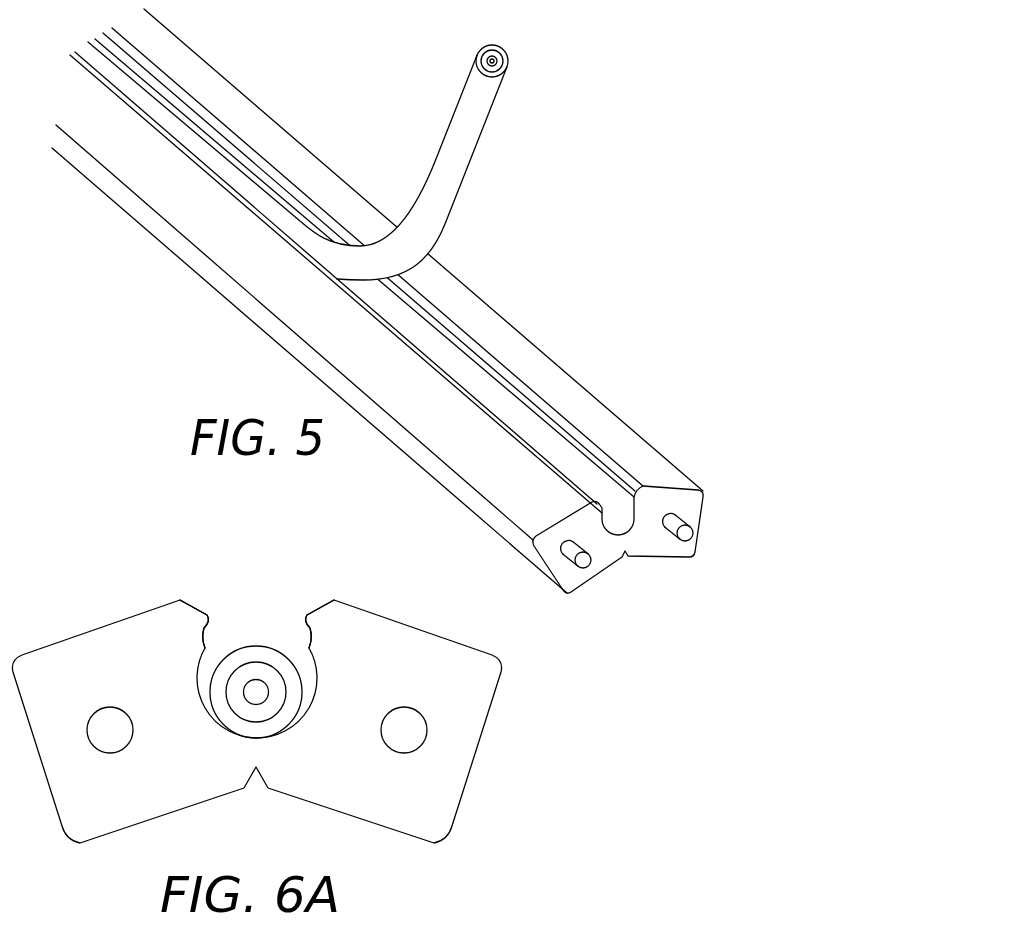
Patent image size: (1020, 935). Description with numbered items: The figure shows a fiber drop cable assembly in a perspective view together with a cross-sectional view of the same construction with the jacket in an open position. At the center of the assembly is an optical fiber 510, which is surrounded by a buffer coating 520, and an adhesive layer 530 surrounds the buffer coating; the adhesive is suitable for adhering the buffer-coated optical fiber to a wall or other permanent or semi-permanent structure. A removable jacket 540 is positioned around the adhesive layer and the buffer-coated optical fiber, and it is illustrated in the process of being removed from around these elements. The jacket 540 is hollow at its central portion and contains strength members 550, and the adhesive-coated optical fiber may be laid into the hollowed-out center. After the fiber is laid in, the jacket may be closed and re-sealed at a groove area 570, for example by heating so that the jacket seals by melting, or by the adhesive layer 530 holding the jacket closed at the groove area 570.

In FIG. 5, the optical fiber 510 is at (505, 52).
In FIG. 6A, the optical fiber 510 is at (250, 688).
In FIG. 5, the buffer coating 520 is at (487, 56).
In FIG. 6A, the buffer coating 520 is at (270, 677).
In FIG. 5, the adhesive layer 530 is at (477, 112).
In FIG. 6A, the adhesive layer 530 is at (240, 657).
In FIG. 5, the removable jacket 540 is at (553, 368).
In FIG. 6A, the removable jacket 540 is at (125, 640).
In FIG. 5, the strength member 550 is at (673, 537).
In FIG. 6A, the strength member 550 is at (386, 732).
In FIG. 6A, the groove area 570 is at (209, 612).